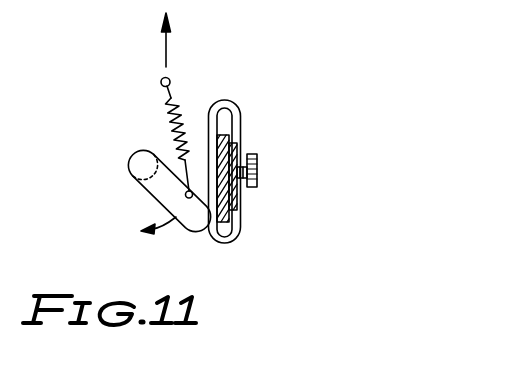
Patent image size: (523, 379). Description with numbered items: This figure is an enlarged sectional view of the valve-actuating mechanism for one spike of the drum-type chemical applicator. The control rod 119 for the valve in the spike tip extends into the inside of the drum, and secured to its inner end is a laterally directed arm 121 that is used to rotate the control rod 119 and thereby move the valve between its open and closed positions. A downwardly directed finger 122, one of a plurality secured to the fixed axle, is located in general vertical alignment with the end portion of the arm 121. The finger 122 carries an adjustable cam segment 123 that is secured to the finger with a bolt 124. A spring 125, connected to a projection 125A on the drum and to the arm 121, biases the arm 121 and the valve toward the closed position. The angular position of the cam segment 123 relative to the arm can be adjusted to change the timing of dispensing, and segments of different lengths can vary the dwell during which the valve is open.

The control rod 119 is at (133, 174).
The laterally directed arm 121 is at (165, 196).
The finger 122 is at (226, 208).
The adjustable cam segment 123 is at (240, 113).
The bolt 124 is at (259, 161).
The spring 125 is at (182, 122).
The projection 125A is at (160, 83).